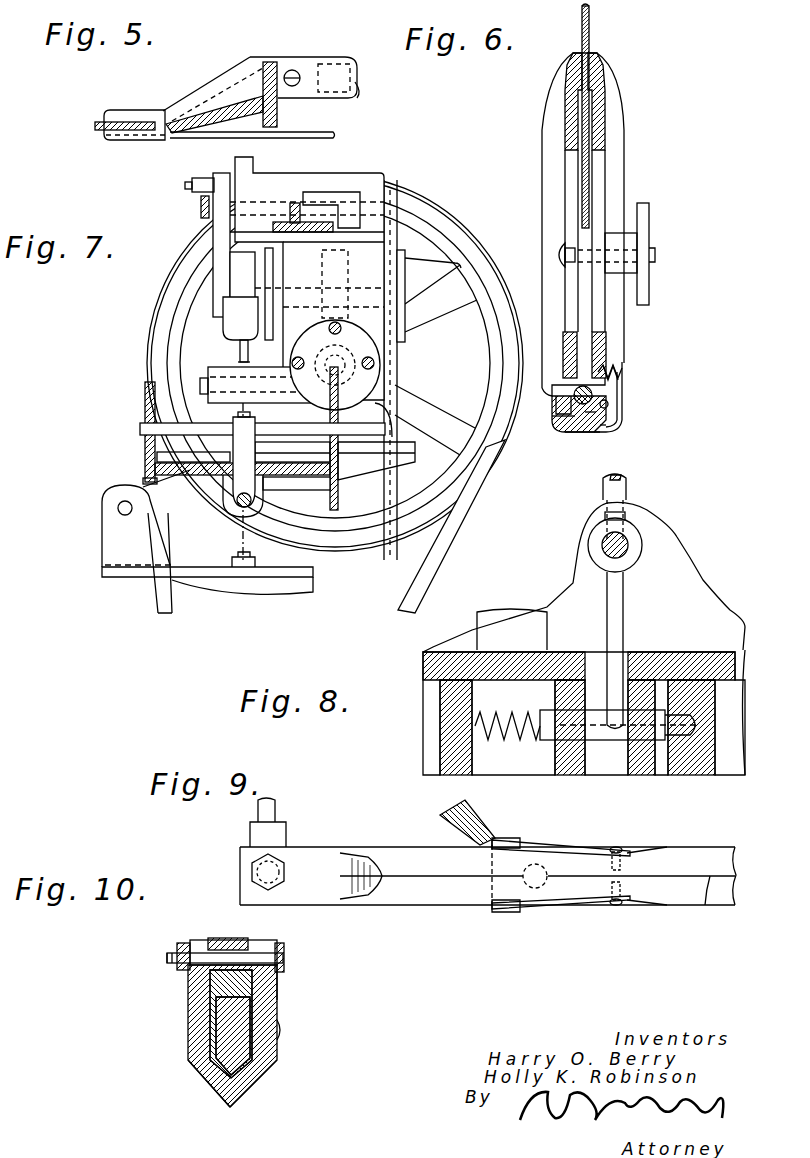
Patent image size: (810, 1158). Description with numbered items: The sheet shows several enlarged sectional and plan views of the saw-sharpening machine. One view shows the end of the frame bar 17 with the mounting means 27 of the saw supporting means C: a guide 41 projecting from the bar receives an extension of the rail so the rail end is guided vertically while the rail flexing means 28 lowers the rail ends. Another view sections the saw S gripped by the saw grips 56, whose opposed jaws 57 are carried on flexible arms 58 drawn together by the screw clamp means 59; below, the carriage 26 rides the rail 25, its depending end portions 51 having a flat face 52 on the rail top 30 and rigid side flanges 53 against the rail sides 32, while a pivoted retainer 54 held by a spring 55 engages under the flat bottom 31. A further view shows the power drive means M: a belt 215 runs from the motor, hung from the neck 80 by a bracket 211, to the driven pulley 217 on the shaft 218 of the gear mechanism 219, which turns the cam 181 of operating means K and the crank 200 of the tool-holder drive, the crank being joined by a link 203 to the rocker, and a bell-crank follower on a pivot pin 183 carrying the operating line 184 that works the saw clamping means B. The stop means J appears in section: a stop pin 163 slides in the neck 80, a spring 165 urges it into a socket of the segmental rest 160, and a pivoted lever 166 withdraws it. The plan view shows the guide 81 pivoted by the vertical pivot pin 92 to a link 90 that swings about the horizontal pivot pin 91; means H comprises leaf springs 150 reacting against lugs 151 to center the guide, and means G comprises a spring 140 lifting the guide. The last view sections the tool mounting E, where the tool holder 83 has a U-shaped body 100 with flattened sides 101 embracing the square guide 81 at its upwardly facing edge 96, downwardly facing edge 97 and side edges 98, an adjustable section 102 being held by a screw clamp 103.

In FIG. 5, the bar 17 is at (340, 100).
In FIG. 5, the mounting means 27 is at (95, 127).
In FIG. 5, the rail flexing means 28 is at (215, 135).
In FIG. 5, the guides 41 is at (107, 140).
In FIG. 6, the saw S is at (580, 191).
In FIG. 6, the saw supporting means C is at (555, 122).
In FIG. 6, the jaws 57 is at (576, 70).
In FIG. 6, the saw grips 56 is at (606, 119).
In FIG. 6, the arms 58 is at (616, 183).
In FIG. 6, the screw clamp means 59 is at (652, 232).
In FIG. 6, the spring 55 is at (624, 373).
In FIG. 6, the pivoted retainer 54 is at (625, 428).
In FIG. 6, the rail 25 is at (578, 436).
In FIG. 6, the carriage 26 is at (574, 392).
In FIG. 6, the flat top 30 is at (558, 400).
In FIG. 6, the depending end portions 51 is at (560, 416).
In FIG. 6, the sides 32 is at (562, 426).
In FIG. 6, the side flanges 53 is at (568, 432).
In FIG. 6, the face 52 is at (581, 432).
In FIG. 6, the flat bottom 31 is at (592, 434).
In FIG. 7, the drive means M is at (467, 414).
In FIG. 7, the gear mechanism 219 is at (365, 268).
In FIG. 7, the crank 200 is at (223, 230).
In FIG. 7, the link 203 is at (200, 206).
In FIG. 7, the cam 181 is at (235, 268).
In FIG. 7, the operating means K is at (237, 296).
In FIG. 8, the operating means K is at (733, 755).
In FIG. 7, the operating line 184 is at (240, 356).
In FIG. 7, the pivot pin 183 is at (208, 382).
In FIG. 7, the shaft 218 is at (395, 352).
In FIG. 7, the pivoted lever 166 is at (392, 368).
In FIG. 8, the pivoted lever 166 is at (627, 490).
In FIG. 7, the saw clamping means B is at (265, 408).
In FIG. 7, the neck 80 is at (145, 460).
In FIG. 8, the neck 80 is at (733, 620).
In FIG. 7, the stop pin 163 is at (256, 498).
In FIG. 8, the stop pin 163 is at (610, 745).
In FIG. 7, the driven pulley 217 is at (375, 545).
In FIG. 7, the bracket 211 is at (100, 550).
In FIG. 7, the belt 215 is at (445, 568).
In FIG. 8, the stop means J is at (689, 657).
In FIG. 8, the spring 165 is at (522, 742).
In FIG. 8, the segmental rest 160 is at (680, 772).
In FIG. 9, the side edges 98 is at (725, 905).
In FIG. 10, the side edges 98 is at (280, 1031).
In FIG. 9, the upwardly facing edge 96 is at (708, 905).
In FIG. 10, the upwardly facing edge 96 is at (280, 970).
In FIG. 9, the guide 81 is at (690, 892).
In FIG. 10, the guide 81 is at (240, 1022).
In FIG. 9, the vertical pivot pin 92 is at (290, 877).
In FIG. 9, the link 90 is at (287, 832).
In FIG. 9, the horizontal pivot pin 91 is at (285, 808).
In FIG. 9, the lugs 151 is at (505, 838).
In FIG. 9, the leaf springs 150 is at (555, 846).
In FIG. 9, the means H is at (505, 913).
In FIG. 9, the spring 140 is at (548, 880).
In FIG. 9, the means G is at (520, 867).
In FIG. 10, the body 100 is at (195, 1040).
In FIG. 10, the flattened sides 101 is at (212, 1015).
In FIG. 10, the adjustable section 102 is at (230, 940).
In FIG. 10, the screw clamp 103 is at (245, 945).
In FIG. 10, the tool mounting E is at (188, 991).
In FIG. 10, the tool holder 83 is at (255, 1085).
In FIG. 10, the downwardly facing edge 97 is at (225, 1097).